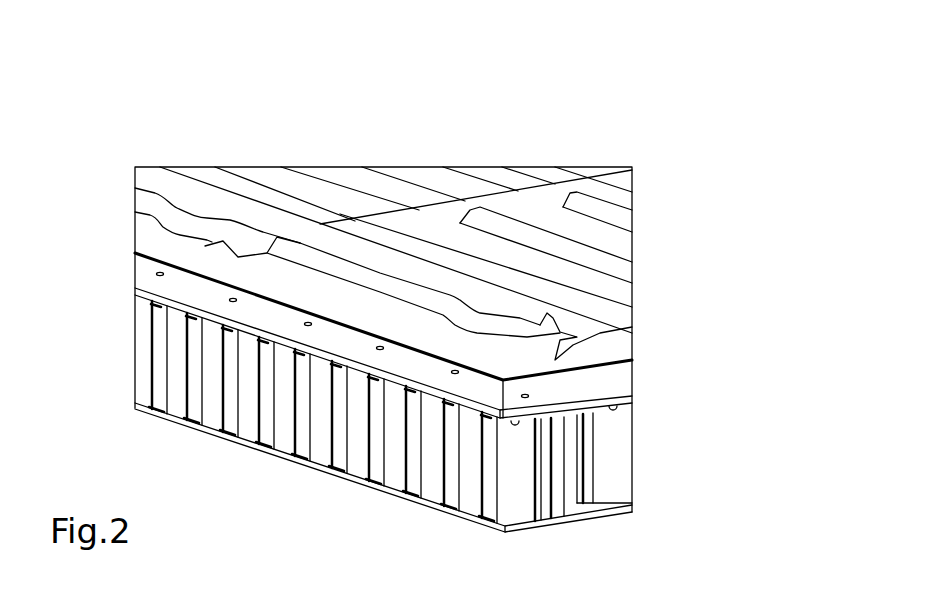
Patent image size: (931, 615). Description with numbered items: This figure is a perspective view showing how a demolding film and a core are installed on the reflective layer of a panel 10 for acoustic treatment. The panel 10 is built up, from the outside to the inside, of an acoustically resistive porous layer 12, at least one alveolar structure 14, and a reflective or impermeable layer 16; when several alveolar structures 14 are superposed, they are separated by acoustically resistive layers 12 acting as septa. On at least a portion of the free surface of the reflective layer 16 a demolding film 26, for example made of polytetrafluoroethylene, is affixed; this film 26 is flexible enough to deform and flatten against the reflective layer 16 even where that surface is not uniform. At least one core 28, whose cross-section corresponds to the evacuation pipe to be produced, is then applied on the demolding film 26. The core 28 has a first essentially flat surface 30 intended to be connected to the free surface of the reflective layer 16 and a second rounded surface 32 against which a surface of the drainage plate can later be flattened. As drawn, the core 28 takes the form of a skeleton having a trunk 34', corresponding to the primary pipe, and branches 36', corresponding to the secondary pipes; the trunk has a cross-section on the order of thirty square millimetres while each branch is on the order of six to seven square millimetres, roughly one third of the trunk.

The panel for acoustic treatment 10 is at (120, 287).
The acoustically resistive porous layer 12 is at (615, 515).
The alveolar structure 14 is at (598, 455).
The reflective layer 16 is at (605, 405).
The demolding film 26 is at (603, 363).
The core 28 is at (508, 216).
The first essentially flat surface 30 is at (605, 340).
The second rounded surface 32 is at (547, 313).
The trunk 34' is at (494, 145).
The branches 36' is at (347, 191).